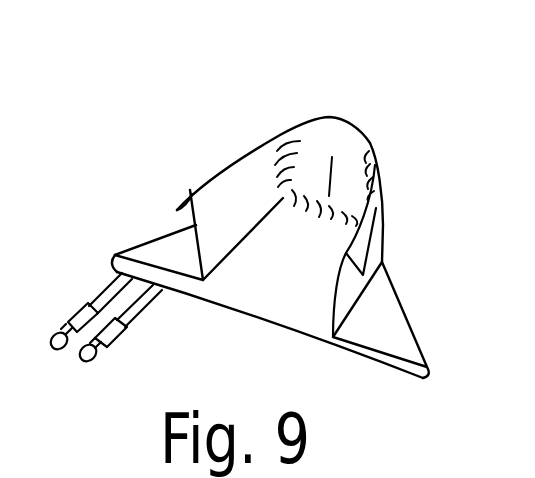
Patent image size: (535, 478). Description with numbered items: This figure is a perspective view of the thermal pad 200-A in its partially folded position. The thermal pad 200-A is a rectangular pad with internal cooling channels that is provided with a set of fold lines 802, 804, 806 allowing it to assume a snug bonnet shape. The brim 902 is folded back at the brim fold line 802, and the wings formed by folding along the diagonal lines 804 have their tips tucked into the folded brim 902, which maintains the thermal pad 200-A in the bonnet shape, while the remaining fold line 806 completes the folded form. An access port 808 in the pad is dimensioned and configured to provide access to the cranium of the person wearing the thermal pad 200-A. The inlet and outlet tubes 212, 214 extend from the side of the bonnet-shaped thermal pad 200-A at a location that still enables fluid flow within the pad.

The thermal pad 200-A is at (170, 94).
The brim fold line 802 is at (190, 197).
The diagonal lines 804 is at (415, 338).
The fold line 806 is at (235, 248).
The access port 808 is at (333, 172).
The brim 902 is at (382, 212).
The inlet and outlet tubes 212 is at (137, 315).
The inlet and outlet tubes 214 is at (100, 293).